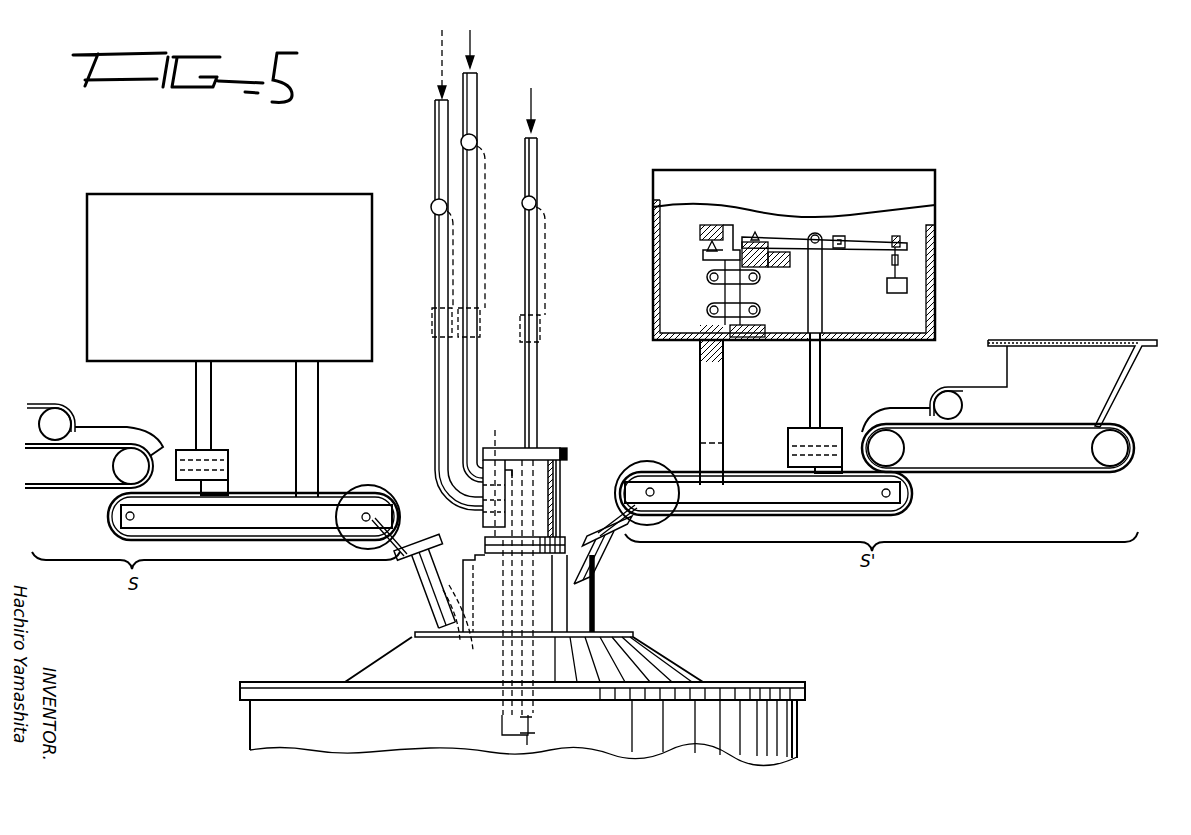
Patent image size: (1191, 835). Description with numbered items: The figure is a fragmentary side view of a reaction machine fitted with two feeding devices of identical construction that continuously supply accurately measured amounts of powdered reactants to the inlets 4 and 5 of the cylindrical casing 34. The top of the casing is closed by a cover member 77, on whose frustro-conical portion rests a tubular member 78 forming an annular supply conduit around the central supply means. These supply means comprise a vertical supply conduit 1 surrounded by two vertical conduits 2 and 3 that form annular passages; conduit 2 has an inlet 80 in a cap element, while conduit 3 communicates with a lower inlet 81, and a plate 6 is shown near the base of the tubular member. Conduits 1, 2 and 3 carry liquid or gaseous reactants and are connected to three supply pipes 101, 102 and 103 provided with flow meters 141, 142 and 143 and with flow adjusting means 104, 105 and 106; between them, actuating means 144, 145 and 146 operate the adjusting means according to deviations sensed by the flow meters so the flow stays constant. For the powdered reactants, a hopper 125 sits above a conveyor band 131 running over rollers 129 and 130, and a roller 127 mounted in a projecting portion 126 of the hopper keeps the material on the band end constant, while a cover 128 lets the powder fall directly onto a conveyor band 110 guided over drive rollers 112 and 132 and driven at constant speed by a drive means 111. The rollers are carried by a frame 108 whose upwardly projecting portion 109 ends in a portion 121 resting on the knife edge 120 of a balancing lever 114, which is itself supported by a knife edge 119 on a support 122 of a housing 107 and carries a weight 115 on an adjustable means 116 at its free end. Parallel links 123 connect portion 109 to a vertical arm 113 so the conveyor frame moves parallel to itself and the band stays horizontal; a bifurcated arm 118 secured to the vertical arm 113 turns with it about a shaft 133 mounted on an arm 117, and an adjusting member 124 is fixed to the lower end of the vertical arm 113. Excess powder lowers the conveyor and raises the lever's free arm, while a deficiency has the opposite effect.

The vertical supply conduit 1 is at (560, 450).
The vertical conduit 2 is at (556, 482).
The vertical conduit 3 is at (548, 510).
The inlet 4 is at (419, 535).
The inlet 5 is at (612, 555).
The plate 6 is at (440, 643).
The cylindrical casing 34 is at (765, 730).
The cover member 77 is at (653, 657).
The tubular member 78 is at (567, 601).
The inlet 80 is at (511, 568).
The lower inlet 81 is at (498, 512).
The supply pipe 101 is at (537, 392).
The supply pipe 102 is at (477, 380).
The supply pipe 103 is at (435, 403).
The flow adjusting means 104 is at (536, 203).
The flow adjusting means 105 is at (477, 142).
The flow adjusting means 106 is at (433, 203).
The housing 107 is at (222, 206).
The frame 108 is at (245, 512).
The upwardly projecting portion 109 is at (310, 418).
The conveyor band 110 is at (222, 540).
The drive means 111 is at (353, 487).
The drive roller 112 is at (905, 495).
The vertical arm 113 is at (208, 407).
The balancing lever 114 is at (845, 245).
The weight 115 is at (907, 285).
The adjustable means 116 is at (900, 240).
The arm 117 is at (792, 250).
The bifurcated arm 118 is at (898, 262).
The knife edge 119 is at (757, 240).
The knife edge 120 is at (728, 226).
The portion 121 is at (708, 225).
The support 122 is at (823, 312).
The parallel links 123 is at (725, 275).
The adjusting member 124 is at (196, 463).
The hopper 125 is at (1060, 348).
The projecting portion 126 is at (52, 404).
The roller 127 is at (60, 420).
The cover 128 is at (126, 427).
The roller 129 is at (135, 460).
The roller 130 is at (1118, 447).
The conveyor band 131 is at (65, 490).
The drive roller 132 is at (367, 500).
The shaft 133 is at (815, 232).
The flow meter 141 is at (542, 337).
The flow meter 142 is at (480, 337).
The flow meter 143 is at (432, 335).
The actuating means 144 is at (546, 265).
The actuating means 145 is at (486, 257).
The actuating means 146 is at (453, 276).